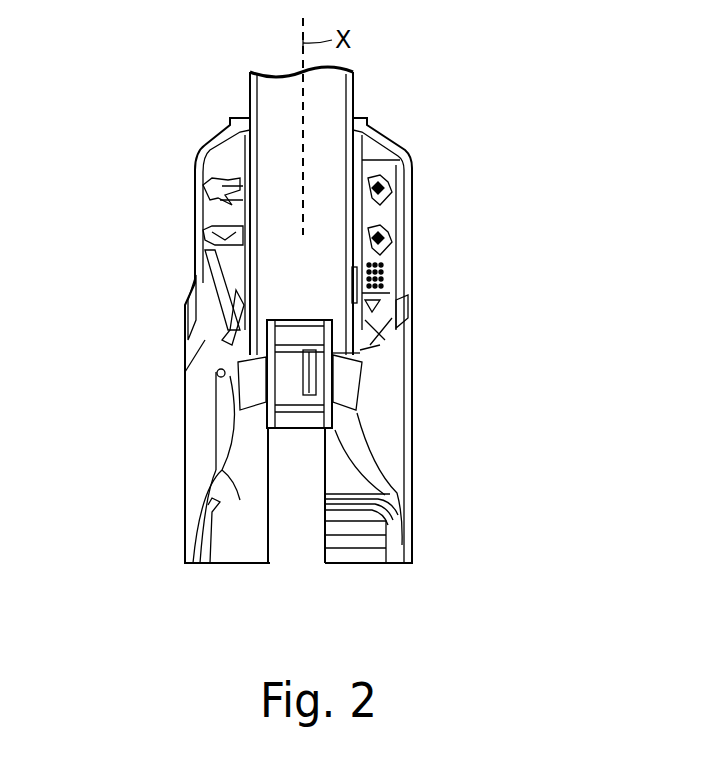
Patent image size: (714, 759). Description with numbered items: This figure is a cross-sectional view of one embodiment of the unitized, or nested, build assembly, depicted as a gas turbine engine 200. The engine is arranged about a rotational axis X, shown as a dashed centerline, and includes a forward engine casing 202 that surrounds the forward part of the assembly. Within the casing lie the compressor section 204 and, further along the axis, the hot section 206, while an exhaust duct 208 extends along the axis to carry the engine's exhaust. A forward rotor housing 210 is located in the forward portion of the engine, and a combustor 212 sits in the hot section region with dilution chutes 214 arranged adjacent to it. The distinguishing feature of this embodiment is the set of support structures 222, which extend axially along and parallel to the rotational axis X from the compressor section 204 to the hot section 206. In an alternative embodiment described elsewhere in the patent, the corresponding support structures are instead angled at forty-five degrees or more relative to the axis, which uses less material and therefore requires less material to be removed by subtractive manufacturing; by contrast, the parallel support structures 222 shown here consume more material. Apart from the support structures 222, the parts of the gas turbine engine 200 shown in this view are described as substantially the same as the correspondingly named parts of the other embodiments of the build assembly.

The gas turbine engine 200 is at (165, 105).
The forward engine casing 202 is at (200, 515).
The compressor section 204 is at (430, 531).
The hot section 206 is at (200, 200).
The exhaust duct 208 is at (355, 85).
The forward rotor housing 210 is at (315, 413).
The combustor 212 is at (392, 270).
The dilution chutes 214 is at (393, 190).
The support structures 222 is at (200, 425).